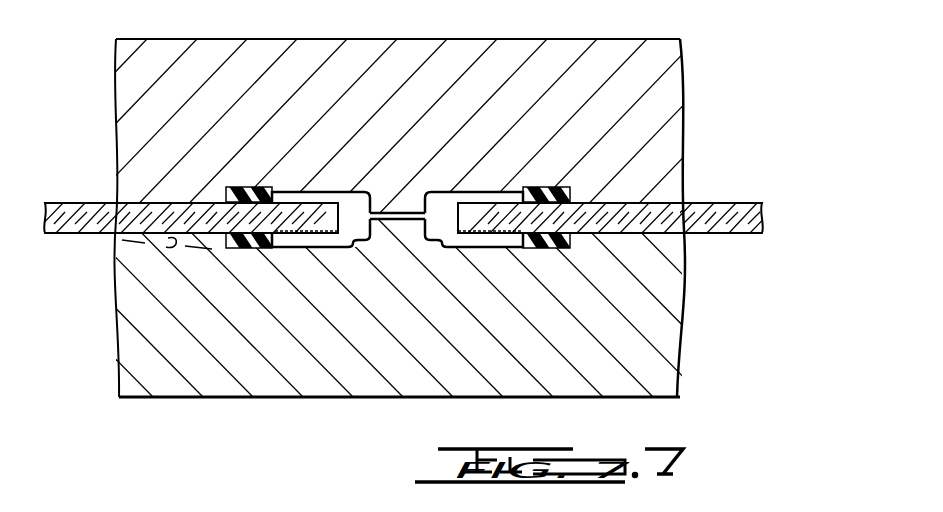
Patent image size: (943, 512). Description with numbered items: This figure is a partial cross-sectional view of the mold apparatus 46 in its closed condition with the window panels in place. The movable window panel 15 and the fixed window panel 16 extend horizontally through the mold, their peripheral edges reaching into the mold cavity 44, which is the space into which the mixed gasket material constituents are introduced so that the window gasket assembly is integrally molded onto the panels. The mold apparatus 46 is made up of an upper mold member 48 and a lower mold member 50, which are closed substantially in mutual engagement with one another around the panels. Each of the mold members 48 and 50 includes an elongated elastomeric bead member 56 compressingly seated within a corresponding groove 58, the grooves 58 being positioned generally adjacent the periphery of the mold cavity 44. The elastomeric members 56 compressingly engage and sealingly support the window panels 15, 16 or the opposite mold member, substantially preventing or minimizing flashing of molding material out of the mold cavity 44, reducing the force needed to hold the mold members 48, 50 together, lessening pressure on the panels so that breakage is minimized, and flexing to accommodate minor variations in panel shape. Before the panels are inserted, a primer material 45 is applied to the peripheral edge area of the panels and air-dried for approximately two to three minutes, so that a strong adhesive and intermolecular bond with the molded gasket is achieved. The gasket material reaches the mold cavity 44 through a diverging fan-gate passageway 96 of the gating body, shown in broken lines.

The movable window panel 15 is at (63, 218).
The fixed window panel 16 is at (726, 205).
The mold cavity 44 is at (360, 205).
The primer material 45 is at (298, 236).
The mold apparatus 46 is at (683, 42).
The mold member 48 is at (665, 97).
The mold member 50 is at (660, 330).
The elastomeric bead member 56 is at (270, 192).
The groove 58 is at (243, 187).
The fan-gate passageway 96 is at (176, 240).